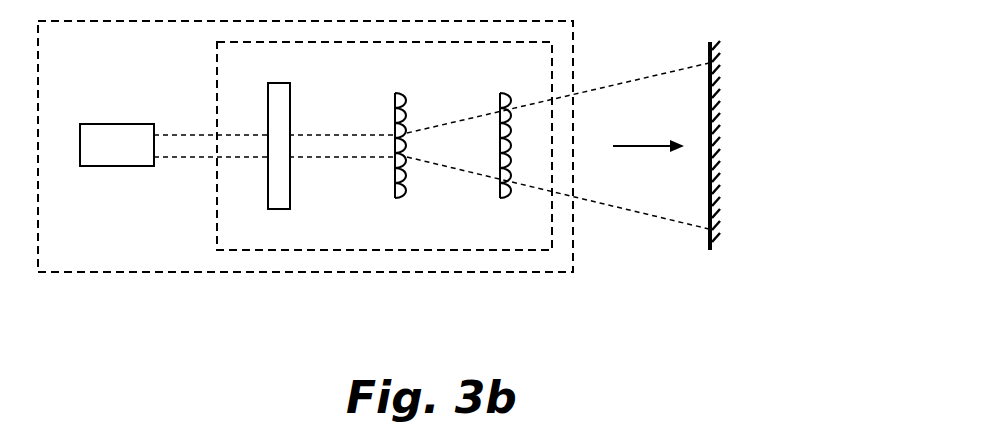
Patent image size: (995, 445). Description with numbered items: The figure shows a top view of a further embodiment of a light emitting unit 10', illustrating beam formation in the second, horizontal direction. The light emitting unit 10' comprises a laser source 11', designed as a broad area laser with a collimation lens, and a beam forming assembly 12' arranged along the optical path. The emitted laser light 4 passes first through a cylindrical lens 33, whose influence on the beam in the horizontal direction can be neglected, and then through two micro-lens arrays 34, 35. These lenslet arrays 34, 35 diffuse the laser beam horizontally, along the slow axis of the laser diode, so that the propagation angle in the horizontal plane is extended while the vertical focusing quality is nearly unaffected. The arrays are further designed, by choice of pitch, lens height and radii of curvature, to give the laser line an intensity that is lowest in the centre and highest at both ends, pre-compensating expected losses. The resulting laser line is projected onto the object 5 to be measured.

The light emitting unit 10' is at (305, 146).
The beam forming assembly 12' is at (384, 146).
The laser source 11' is at (103, 176).
The measuring beam 4 is at (421, 146).
The cylindrical lens 33 is at (246, 198).
The micro-lens array 34 is at (364, 203).
The micro-lens array 35 is at (469, 203).
The object 5 is at (715, 123).